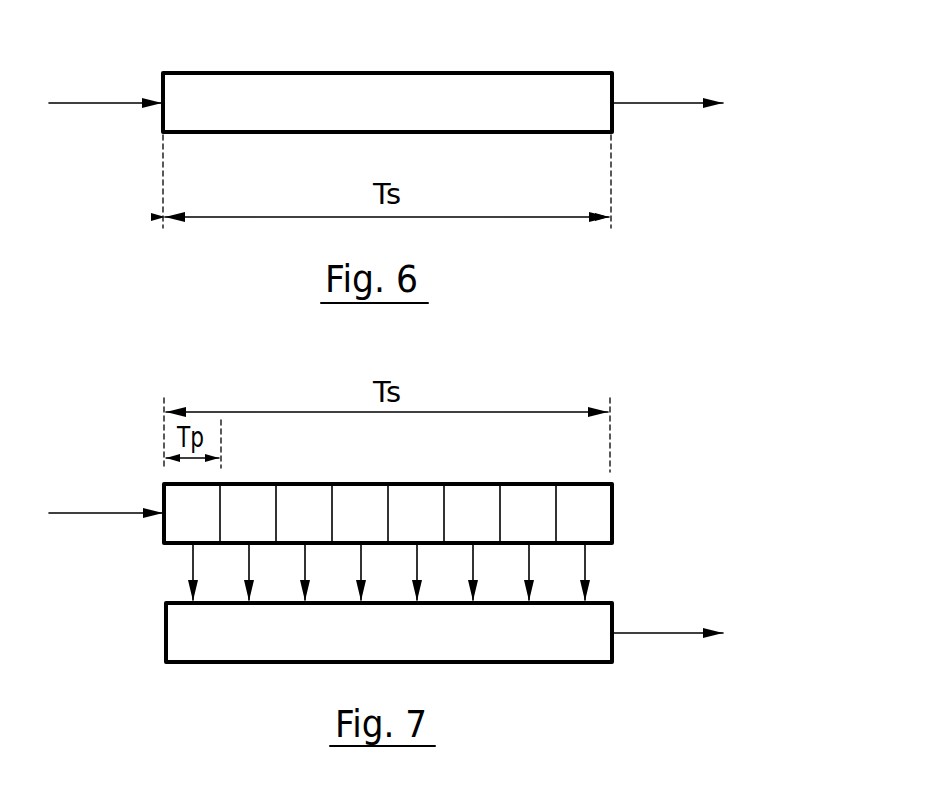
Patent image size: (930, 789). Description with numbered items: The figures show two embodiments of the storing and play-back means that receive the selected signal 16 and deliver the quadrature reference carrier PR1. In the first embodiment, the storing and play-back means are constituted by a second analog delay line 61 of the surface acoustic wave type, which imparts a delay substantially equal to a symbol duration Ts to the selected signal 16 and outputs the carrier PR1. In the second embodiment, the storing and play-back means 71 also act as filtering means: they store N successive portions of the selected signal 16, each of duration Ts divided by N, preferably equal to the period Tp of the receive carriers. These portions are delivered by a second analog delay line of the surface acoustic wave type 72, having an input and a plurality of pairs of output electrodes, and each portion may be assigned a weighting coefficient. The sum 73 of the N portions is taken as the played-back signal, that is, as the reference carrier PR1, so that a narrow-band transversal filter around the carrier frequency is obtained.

In FIG. 6, the selected signal 16 is at (108, 104).
In FIG. 7, the selected signal 16 is at (108, 514).
In FIG. 6, the second analog delay line 61 is at (475, 70).
In FIG. 6, the quadrature receive carrier PR1 is at (650, 106).
In FIG. 7, the quadrature receive carrier PR1 is at (650, 640).
In FIG. 7, the storing and play-back means 71 is at (630, 480).
In FIG. 7, the second analog delay line of the surface acoustic wave type 72 is at (613, 530).
In FIG. 7, the sum 73 is at (215, 655).